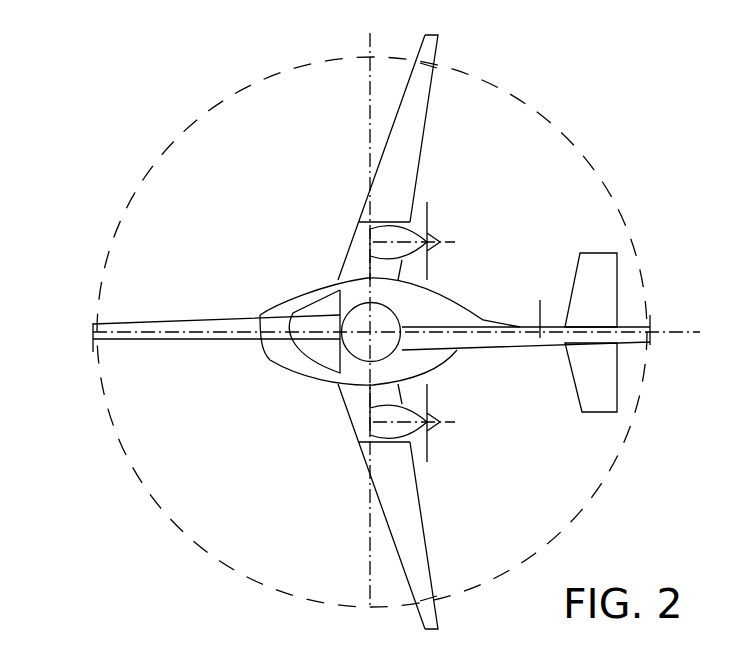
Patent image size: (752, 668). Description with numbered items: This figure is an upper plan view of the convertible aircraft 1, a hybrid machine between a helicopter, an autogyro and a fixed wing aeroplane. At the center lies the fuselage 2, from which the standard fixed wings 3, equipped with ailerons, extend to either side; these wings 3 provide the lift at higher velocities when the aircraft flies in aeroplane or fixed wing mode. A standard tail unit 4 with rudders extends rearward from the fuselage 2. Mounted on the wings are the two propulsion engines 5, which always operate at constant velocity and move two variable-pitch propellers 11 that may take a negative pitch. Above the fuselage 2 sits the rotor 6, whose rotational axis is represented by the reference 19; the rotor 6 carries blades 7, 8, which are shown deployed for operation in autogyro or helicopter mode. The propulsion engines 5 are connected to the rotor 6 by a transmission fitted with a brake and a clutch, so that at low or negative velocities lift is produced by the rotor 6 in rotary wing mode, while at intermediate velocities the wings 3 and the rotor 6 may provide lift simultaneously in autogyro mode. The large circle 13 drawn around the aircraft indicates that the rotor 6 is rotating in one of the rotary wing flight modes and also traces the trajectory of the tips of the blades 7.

The convertible aircraft 1 is at (92, 248).
The fuselage 2 is at (435, 305).
The fixed wings 3 is at (413, 155).
The tail unit 4 is at (612, 318).
The propulsion engines 5 is at (393, 227).
The rotor 6 is at (355, 297).
The blade 7 is at (222, 320).
The blade 8 is at (540, 300).
The variable-pitch propellers 11 is at (430, 215).
The circle 13 is at (555, 128).
The rotational axis 19 is at (368, 362).